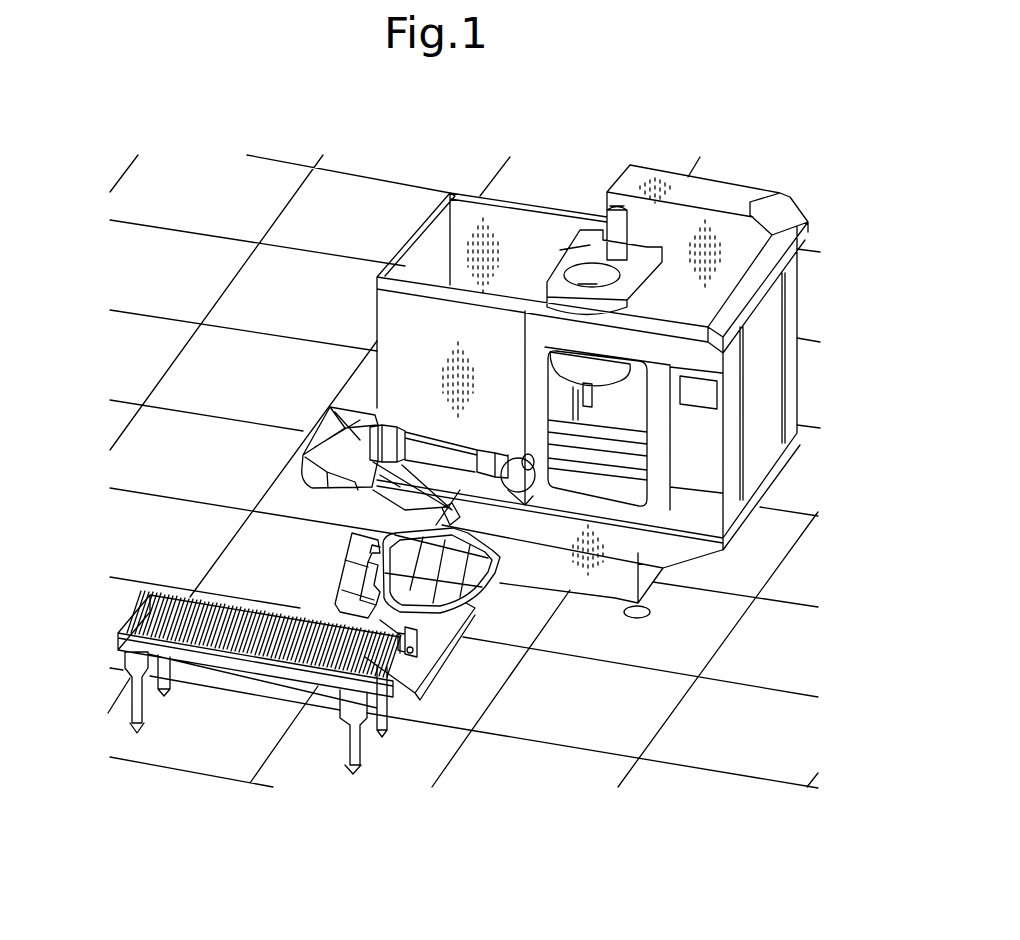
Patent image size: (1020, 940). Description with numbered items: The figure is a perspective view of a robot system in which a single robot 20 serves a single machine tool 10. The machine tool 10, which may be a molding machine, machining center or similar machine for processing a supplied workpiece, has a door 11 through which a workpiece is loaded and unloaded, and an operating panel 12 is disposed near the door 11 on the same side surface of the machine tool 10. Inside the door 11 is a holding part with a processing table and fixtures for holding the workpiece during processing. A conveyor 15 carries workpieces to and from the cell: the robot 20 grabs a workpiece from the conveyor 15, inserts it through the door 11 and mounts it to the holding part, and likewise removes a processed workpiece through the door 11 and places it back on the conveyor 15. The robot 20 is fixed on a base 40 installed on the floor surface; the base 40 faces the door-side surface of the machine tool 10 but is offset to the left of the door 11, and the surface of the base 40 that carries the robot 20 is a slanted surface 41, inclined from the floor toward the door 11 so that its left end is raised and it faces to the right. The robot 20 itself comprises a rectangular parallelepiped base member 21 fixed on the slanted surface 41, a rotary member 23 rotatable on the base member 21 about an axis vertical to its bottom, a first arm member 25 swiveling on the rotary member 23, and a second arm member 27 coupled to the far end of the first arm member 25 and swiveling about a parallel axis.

The machine tool 10 is at (441, 330).
The door 11 is at (627, 403).
The operating panel 12 is at (703, 385).
The conveyor 15 is at (130, 643).
The robot 20 is at (330, 470).
The base member 21 is at (512, 582).
The rotary member 23 is at (470, 580).
The first arm member 25 is at (383, 482).
The second arm member 27 is at (430, 440).
The base 40 is at (398, 705).
The slanted surface 41 is at (330, 592).